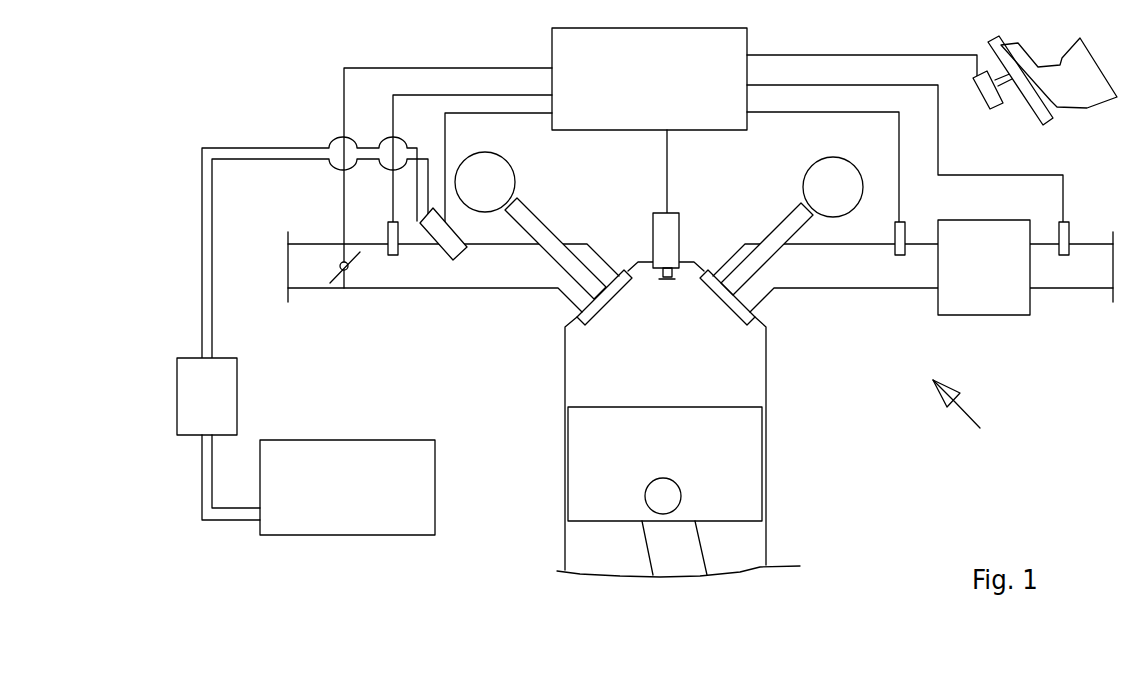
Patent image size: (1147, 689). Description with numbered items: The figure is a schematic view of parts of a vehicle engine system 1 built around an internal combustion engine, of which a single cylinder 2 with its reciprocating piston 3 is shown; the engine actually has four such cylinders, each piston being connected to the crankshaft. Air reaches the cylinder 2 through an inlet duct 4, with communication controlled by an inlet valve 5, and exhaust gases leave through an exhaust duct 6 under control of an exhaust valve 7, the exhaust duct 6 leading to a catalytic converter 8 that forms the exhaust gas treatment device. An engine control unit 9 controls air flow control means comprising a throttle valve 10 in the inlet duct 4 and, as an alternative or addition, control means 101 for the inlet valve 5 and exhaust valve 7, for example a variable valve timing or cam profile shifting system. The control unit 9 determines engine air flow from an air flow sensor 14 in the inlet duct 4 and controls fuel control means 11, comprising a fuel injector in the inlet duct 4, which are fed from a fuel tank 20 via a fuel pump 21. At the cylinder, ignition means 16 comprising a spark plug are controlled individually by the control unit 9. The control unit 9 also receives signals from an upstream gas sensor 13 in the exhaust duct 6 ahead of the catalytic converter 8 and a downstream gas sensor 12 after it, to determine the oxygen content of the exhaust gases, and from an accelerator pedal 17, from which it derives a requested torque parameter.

The vehicle engine system 1 is at (963, 419).
The cylinder 2 is at (665, 416).
The piston 3 is at (678, 492).
The inlet duct 4 is at (453, 272).
The inlet valve 5 is at (598, 313).
The exhaust duct 6 is at (913, 272).
The exhaust valve 7 is at (734, 313).
The catalytic converter 8 is at (984, 267).
The engine control unit 9 is at (703, 158).
The throttle valve 10 is at (344, 288).
The fuel control means 11 is at (445, 260).
The downstream gas sensor 12 is at (1069, 230).
The upstream gas sensor 13 is at (905, 233).
The air flow sensor 14 is at (387, 225).
The ignition means 16 is at (680, 228).
The accelerator pedal 17 is at (1028, 105).
The fuel tank 20 is at (318, 485).
The fuel pump 21 is at (302, 286).
The control means for the inlet and/or exhaust valves 101 is at (659, 225).